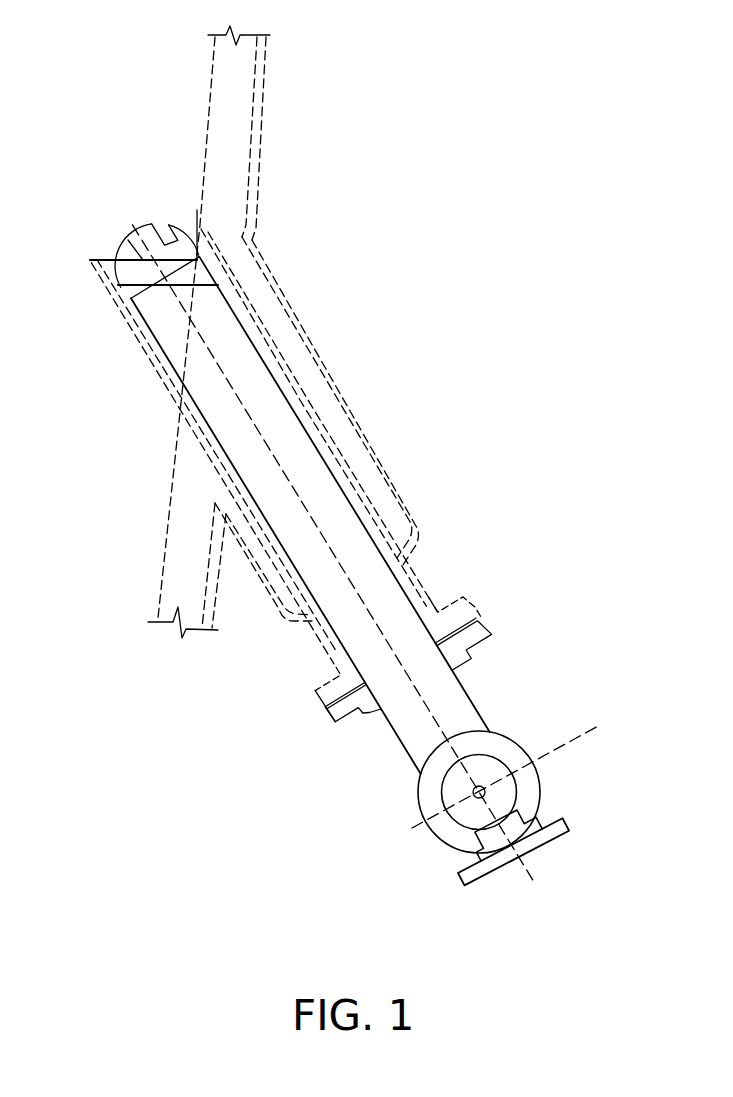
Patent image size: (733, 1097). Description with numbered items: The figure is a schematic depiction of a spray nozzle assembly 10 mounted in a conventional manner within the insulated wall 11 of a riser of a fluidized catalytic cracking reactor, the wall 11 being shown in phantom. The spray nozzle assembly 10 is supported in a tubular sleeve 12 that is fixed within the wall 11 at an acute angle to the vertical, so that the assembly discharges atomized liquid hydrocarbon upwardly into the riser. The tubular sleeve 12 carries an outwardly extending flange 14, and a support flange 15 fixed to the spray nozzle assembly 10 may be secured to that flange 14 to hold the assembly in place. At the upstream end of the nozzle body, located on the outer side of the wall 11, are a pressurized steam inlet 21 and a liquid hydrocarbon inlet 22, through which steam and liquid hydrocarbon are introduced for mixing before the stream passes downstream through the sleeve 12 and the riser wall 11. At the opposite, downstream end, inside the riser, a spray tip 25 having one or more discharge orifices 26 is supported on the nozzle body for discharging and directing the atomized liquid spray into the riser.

The spray nozzle assembly 10 is at (478, 706).
The insulated wall 11 is at (262, 113).
The tubular sleeve 12 is at (325, 371).
The outwardly extending flange 14 is at (468, 601).
The support flange 15 is at (483, 625).
The pressurized steam inlet 21 is at (517, 743).
The liquid hydrocarbon inlet 22 is at (538, 820).
The spray tip 25 is at (157, 222).
The discharge orifices 26 is at (128, 240).